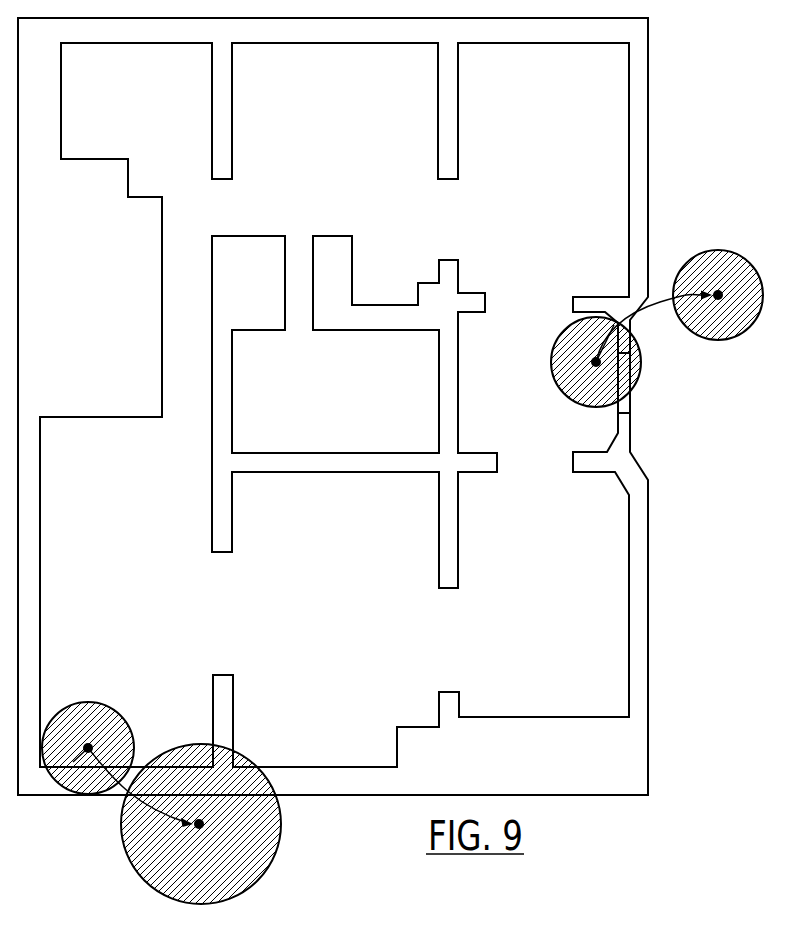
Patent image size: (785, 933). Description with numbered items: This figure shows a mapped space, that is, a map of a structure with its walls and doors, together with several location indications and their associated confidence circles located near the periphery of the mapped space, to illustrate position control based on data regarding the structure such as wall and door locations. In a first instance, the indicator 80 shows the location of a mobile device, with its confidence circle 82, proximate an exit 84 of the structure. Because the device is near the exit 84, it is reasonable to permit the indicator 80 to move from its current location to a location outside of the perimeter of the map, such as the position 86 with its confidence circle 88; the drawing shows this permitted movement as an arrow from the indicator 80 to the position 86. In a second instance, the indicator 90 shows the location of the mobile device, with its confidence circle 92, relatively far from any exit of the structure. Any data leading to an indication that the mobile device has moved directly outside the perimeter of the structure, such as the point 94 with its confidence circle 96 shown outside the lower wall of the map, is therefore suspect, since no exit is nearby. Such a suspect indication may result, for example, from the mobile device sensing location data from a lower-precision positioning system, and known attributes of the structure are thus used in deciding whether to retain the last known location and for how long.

The indicator 80 is at (618, 378).
The confidence circle 82 is at (562, 392).
The exit 84 is at (628, 404).
The position 86 is at (713, 291).
The confidence circle 88 is at (753, 326).
The indicator 90 is at (65, 765).
The confidence circle 92 is at (116, 793).
The lower second position 94 is at (199, 824).
The confidence circle 96 is at (267, 868).